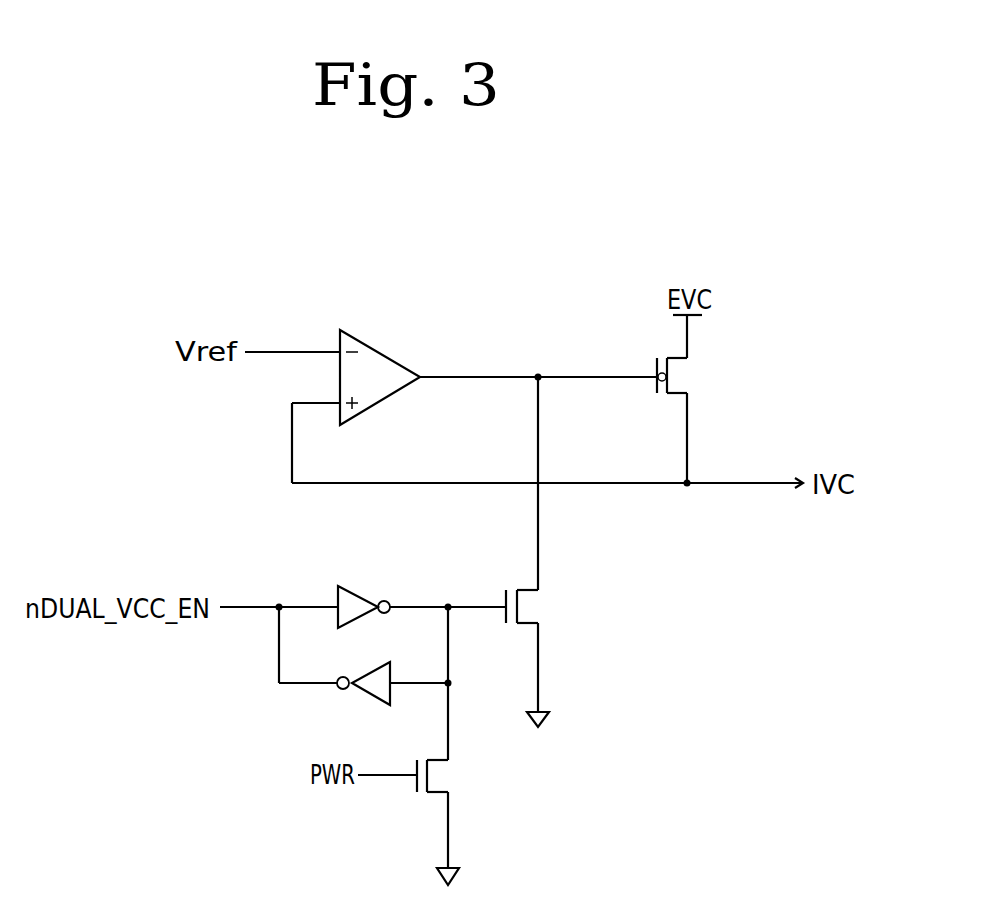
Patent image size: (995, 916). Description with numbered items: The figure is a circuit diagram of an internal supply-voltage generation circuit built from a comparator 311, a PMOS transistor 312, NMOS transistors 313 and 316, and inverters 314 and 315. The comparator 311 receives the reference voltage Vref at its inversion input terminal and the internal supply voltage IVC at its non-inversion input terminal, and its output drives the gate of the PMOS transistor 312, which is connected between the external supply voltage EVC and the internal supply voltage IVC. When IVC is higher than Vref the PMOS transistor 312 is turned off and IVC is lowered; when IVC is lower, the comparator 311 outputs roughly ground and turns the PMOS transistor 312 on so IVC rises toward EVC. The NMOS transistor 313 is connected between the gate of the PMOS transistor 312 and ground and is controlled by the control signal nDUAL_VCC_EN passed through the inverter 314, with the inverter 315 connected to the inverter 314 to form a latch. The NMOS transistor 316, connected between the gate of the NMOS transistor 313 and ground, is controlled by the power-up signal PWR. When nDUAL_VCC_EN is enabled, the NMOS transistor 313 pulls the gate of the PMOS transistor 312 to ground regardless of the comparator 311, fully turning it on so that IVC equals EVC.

The comparator 311 is at (382, 350).
The PMOS transistor 312 is at (698, 376).
The NMOS transistor 313 is at (547, 607).
The inverter 314 is at (361, 592).
The inverter 315 is at (368, 698).
The NMOS transistor 316 is at (457, 777).